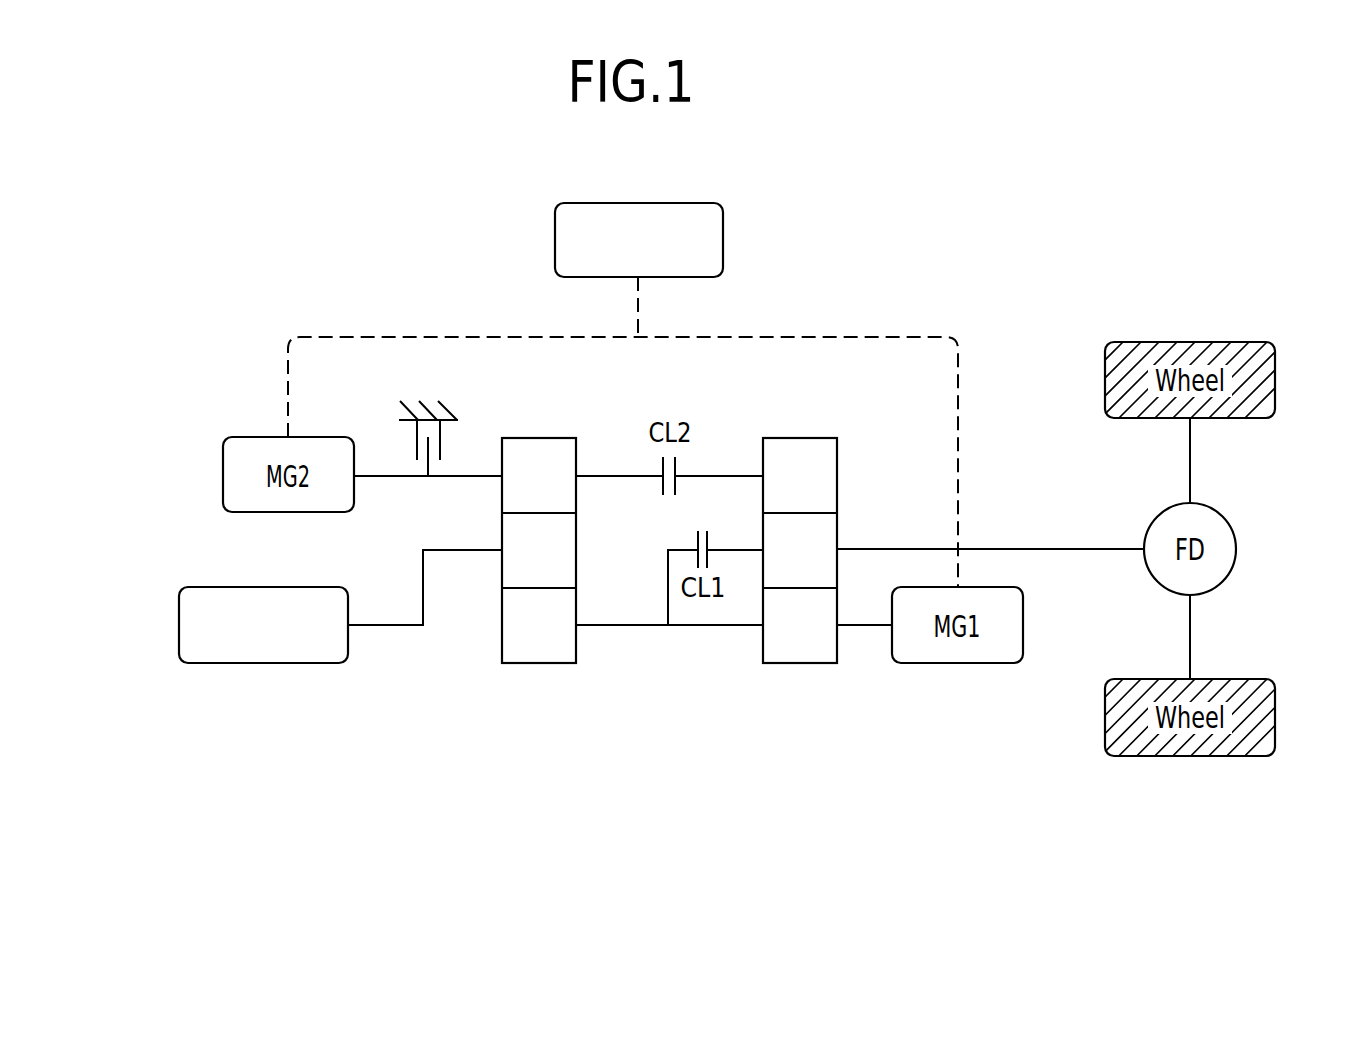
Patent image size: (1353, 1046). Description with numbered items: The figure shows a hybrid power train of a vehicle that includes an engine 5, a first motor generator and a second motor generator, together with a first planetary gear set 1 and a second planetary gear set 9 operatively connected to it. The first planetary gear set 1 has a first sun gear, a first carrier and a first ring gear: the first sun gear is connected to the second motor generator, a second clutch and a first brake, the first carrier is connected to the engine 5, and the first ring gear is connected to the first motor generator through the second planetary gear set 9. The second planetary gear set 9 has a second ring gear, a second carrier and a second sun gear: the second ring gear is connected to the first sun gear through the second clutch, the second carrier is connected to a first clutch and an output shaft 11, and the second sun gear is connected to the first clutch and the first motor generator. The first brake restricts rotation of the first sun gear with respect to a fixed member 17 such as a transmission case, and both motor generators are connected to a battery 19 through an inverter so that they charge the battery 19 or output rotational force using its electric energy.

The first planetary gear set 1 is at (538, 664).
The engine 5 is at (268, 663).
The second planetary gear set 9 is at (800, 664).
The output shaft 11 is at (1024, 548).
The fixed member 17 is at (437, 400).
The battery 19 is at (723, 235).